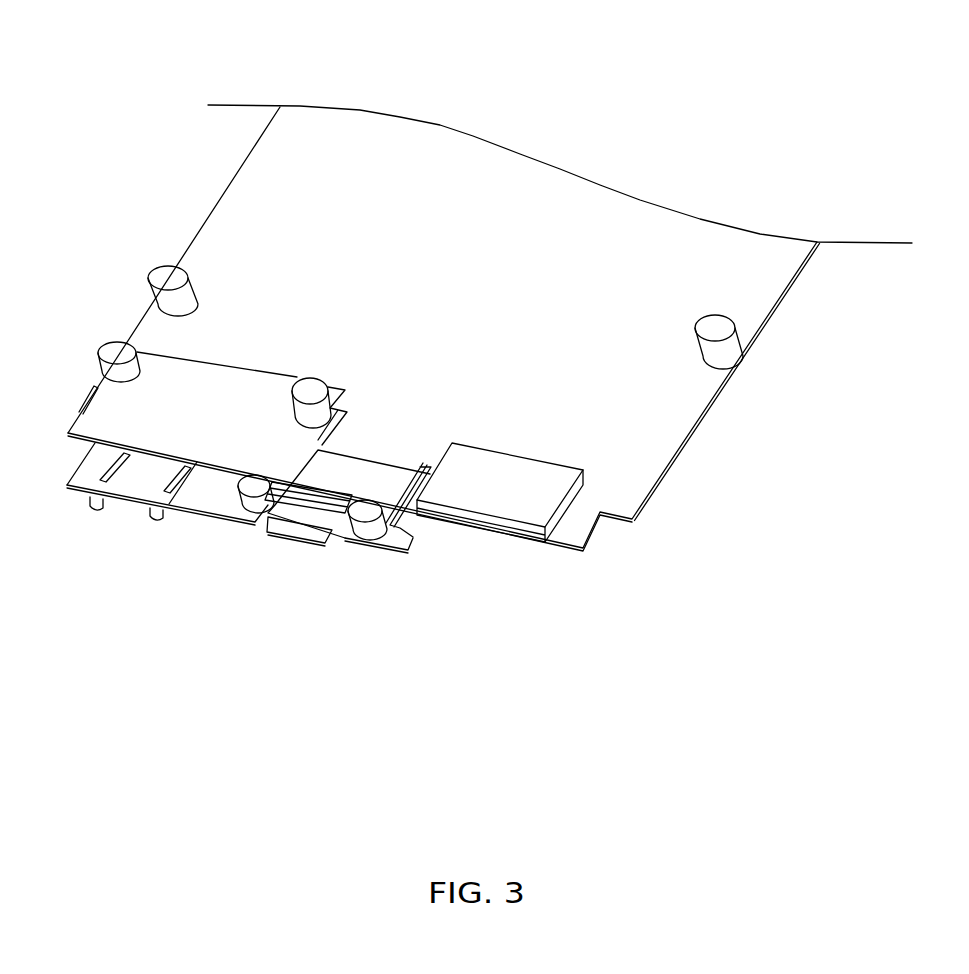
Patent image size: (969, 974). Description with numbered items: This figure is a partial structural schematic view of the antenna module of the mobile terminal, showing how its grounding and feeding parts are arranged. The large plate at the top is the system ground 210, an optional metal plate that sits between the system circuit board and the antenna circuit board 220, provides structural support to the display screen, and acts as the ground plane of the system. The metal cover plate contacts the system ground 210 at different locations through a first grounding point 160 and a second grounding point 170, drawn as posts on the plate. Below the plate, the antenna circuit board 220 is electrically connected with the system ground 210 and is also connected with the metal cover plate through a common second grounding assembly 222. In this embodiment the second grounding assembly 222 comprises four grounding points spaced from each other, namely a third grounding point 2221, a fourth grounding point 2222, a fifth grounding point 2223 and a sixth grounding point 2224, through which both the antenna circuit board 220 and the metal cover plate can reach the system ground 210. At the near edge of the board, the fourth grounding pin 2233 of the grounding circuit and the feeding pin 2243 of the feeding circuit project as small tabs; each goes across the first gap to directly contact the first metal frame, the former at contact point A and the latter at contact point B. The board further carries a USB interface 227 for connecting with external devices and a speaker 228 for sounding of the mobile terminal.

The system ground 210 is at (470, 150).
The first grounding point 160 is at (165, 272).
The second grounding point 170 is at (713, 330).
The antenna circuit board 220 is at (220, 478).
The second grounding assembly 222 is at (515, 327).
The third grounding point 2221 is at (125, 348).
The fourth grounding point 2222 is at (312, 385).
The fifth grounding point 2223 is at (266, 481).
The sixth grounding point 2224 is at (380, 507).
The fourth grounding pin 2233 is at (90, 500).
The feeding pin 2243 is at (166, 512).
The USB interface 227 is at (308, 528).
The speaker 228 is at (553, 497).